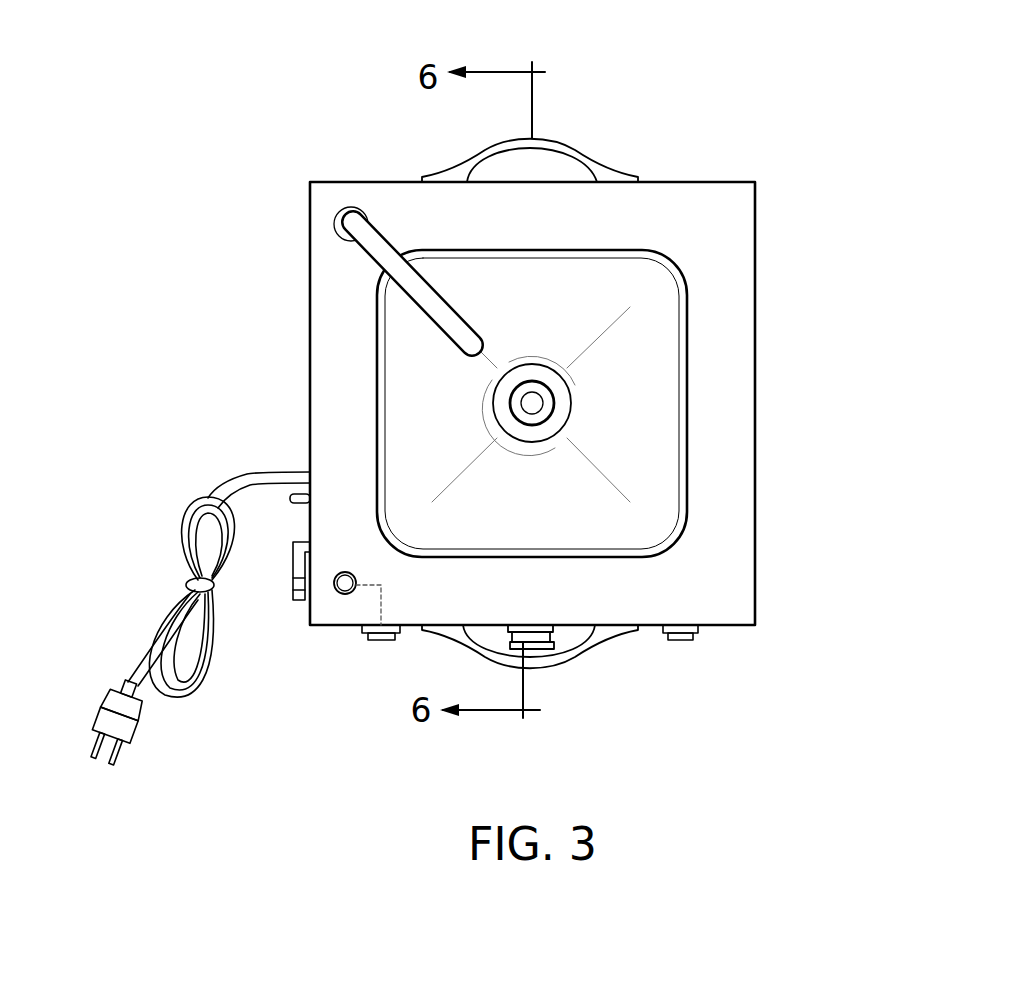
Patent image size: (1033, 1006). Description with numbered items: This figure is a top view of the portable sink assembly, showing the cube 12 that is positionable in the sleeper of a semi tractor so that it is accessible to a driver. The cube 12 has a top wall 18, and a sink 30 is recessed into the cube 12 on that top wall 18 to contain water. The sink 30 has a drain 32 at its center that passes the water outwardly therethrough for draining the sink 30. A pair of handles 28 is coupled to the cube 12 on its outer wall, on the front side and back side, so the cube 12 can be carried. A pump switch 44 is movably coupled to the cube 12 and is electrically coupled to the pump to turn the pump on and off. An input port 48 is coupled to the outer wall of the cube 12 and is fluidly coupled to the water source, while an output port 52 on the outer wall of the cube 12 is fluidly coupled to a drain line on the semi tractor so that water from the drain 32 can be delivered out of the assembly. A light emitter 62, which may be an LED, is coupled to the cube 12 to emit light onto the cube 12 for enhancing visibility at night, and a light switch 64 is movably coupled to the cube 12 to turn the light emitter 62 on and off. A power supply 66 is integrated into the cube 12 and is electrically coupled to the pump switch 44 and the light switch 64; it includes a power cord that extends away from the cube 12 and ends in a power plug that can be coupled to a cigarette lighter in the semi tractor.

The cube 12 is at (755, 182).
The top wall 18 is at (695, 232).
The handles 28 is at (582, 155).
The sink 30 is at (680, 447).
The drain 32 is at (555, 400).
The pump switch 44 is at (668, 640).
The input port 48 is at (290, 583).
The output port 52 is at (246, 478).
The light emitter 62 is at (343, 598).
The light switch 64 is at (384, 640).
The power supply 66 is at (150, 573).